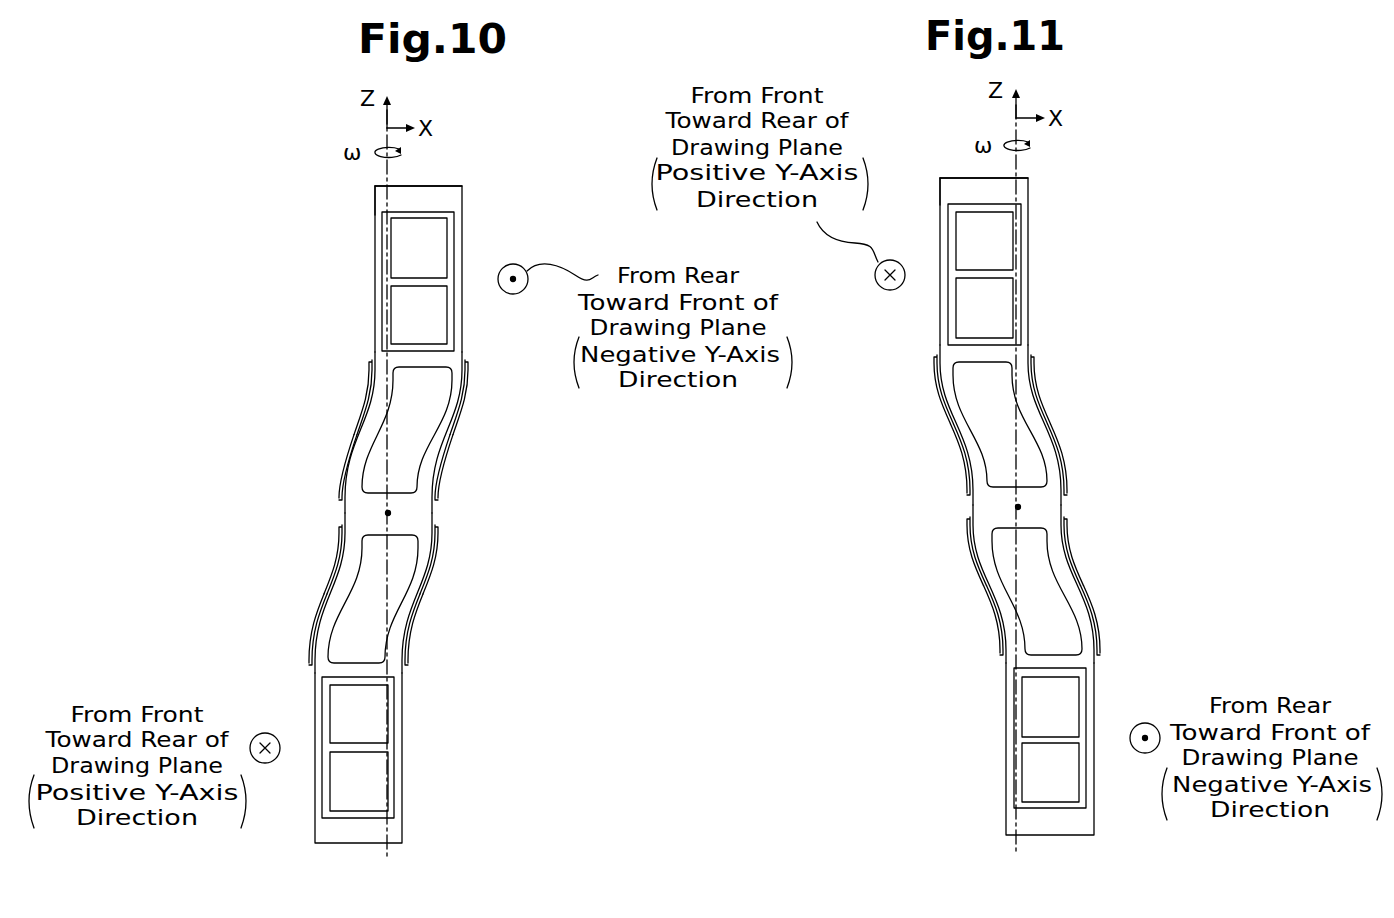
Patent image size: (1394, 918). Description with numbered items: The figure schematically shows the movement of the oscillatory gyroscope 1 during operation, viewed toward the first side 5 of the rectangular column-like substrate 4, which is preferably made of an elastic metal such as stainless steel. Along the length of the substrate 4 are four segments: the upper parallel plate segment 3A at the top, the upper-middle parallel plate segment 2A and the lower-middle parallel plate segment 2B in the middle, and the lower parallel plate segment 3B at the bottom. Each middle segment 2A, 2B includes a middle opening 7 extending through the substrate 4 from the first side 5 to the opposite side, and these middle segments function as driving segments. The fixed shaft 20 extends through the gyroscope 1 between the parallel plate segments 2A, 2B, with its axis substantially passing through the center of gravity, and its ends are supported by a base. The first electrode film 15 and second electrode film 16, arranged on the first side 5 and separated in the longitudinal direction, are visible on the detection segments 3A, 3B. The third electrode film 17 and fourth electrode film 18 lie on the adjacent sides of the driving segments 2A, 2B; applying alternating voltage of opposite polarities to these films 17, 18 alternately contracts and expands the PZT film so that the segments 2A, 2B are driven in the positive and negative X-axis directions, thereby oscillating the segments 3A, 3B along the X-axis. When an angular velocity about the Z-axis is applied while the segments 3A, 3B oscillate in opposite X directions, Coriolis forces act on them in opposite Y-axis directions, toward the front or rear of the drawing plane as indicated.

In FIG. 10, the oscillatory gyroscope 1 is at (491, 159).
In FIG. 11, the oscillatory gyroscope 1 is at (1089, 149).
In FIG. 10, the upper-middle parallel plate segment 2A is at (517, 367).
In FIG. 11, the upper-middle parallel plate segment 2A is at (886, 363).
In FIG. 10, the lower-middle parallel plate segment 2B is at (489, 535).
In FIG. 11, the lower-middle parallel plate segment 2B is at (919, 530).
In FIG. 10, the upper parallel plate segment 3A is at (324, 212).
In FIG. 11, the upper parallel plate segment 3A is at (1077, 204).
In FIG. 10, the lower parallel plate segment 3B is at (439, 677).
In FIG. 11, the lower parallel plate segment 3B is at (973, 670).
In FIG. 10, the substrate 4 is at (378, 197).
In FIG. 11, the substrate 4 is at (945, 190).
In FIG. 10, the first side 5 is at (437, 190).
In FIG. 11, the first side 5 is at (955, 186).
In FIG. 10, the middle opening 7 is at (443, 399).
In FIG. 11, the middle opening 7 is at (963, 390).
In FIG. 10, the first electrode film 15 is at (438, 245).
In FIG. 11, the first electrode film 15 is at (967, 247).
In FIG. 10, the second electrode film 16 is at (438, 315).
In FIG. 11, the second electrode film 16 is at (967, 310).
In FIG. 10, the third electrode film 17 is at (463, 397).
In FIG. 11, the third electrode film 17 is at (1037, 383).
In FIG. 10, the fourth electrode film 18 is at (372, 393).
In FIG. 11, the fourth electrode film 18 is at (940, 390).
In FIG. 10, the fixed shaft 20 is at (391, 513).
In FIG. 11, the fixed shaft 20 is at (1015, 507).